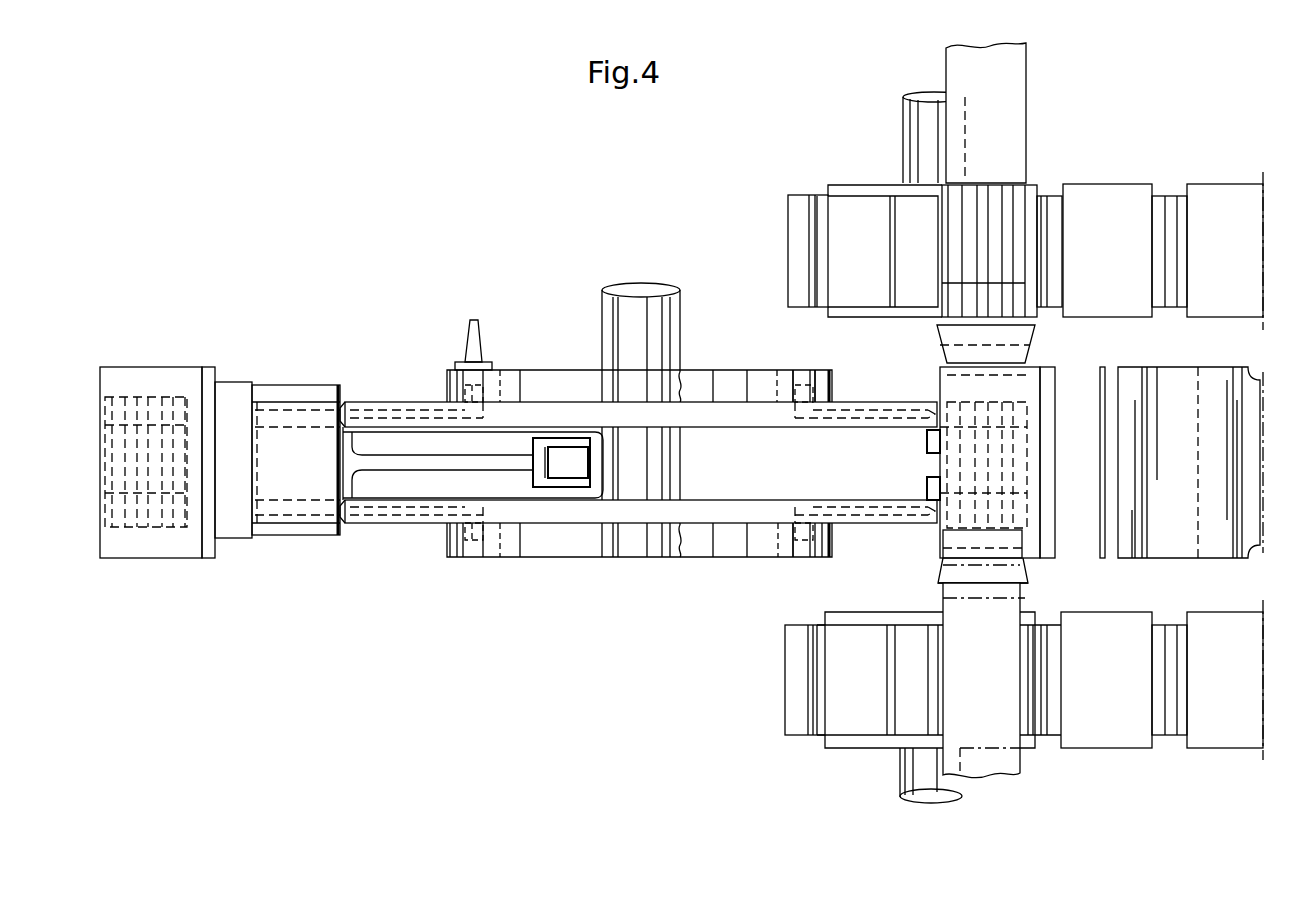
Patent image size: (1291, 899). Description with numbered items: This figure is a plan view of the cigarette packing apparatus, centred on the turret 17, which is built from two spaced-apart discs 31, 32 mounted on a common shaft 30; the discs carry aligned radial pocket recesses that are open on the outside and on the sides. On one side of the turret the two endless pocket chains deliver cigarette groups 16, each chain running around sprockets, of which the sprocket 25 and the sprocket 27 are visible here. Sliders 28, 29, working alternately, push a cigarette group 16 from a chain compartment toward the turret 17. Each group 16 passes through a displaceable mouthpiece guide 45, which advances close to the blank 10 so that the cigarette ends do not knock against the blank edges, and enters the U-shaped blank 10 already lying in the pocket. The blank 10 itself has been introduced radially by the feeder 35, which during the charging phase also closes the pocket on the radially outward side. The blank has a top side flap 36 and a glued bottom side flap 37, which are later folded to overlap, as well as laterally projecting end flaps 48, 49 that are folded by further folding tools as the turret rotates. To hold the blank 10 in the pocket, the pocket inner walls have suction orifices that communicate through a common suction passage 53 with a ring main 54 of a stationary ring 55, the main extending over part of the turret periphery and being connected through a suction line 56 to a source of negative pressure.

The blank 10 is at (1100, 462).
The cigarette group 16 is at (1028, 184).
The turret 17 is at (718, 360).
The sprocket 25 is at (862, 190).
The sprocket 27 is at (853, 746).
The slider 28 is at (1014, 91).
The slider 29 is at (1010, 766).
The common shaft 30 is at (629, 315).
The disc 31 is at (533, 408).
The disc 32 is at (578, 520).
The feeder 35 is at (1168, 543).
The top side flap 36 is at (1028, 550).
The bottom side flap 37 is at (1052, 512).
The mouthpiece guide 45 is at (1023, 335).
The end flap 48 is at (945, 386).
The end flap 49 is at (940, 543).
The common suction passage 53 is at (880, 510).
The ring main 54 is at (800, 392).
The stationary ring 55 is at (818, 372).
The suction line 56 is at (468, 335).